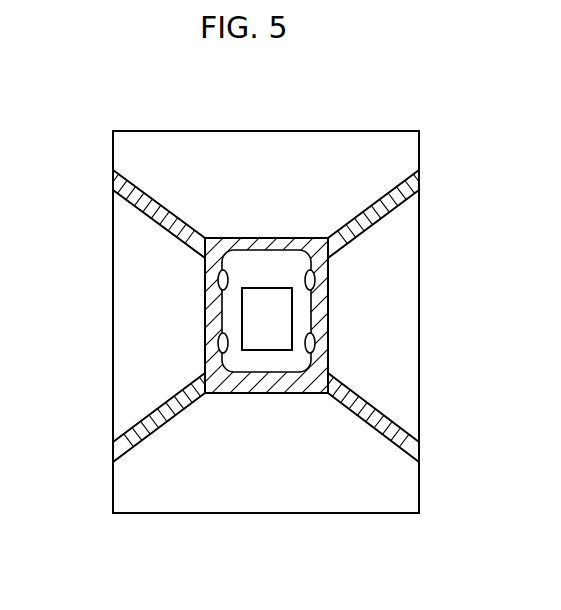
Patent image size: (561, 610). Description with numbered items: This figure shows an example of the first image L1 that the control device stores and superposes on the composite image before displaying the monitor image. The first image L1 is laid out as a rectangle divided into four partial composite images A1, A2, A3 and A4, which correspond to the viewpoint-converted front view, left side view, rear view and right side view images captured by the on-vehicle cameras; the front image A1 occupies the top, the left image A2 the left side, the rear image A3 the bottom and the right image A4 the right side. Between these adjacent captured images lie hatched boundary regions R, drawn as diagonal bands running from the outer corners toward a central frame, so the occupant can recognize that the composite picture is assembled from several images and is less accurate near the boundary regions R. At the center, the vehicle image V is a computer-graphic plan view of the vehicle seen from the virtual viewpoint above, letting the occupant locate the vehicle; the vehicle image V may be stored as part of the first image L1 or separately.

The first image L1 is at (387, 107).
The partial composite image A1 is at (258, 148).
The partial composite image A2 is at (124, 305).
The partial composite image A3 is at (258, 503).
The partial composite image A4 is at (398, 302).
The boundary region R is at (143, 210).
The vehicle image V is at (305, 322).